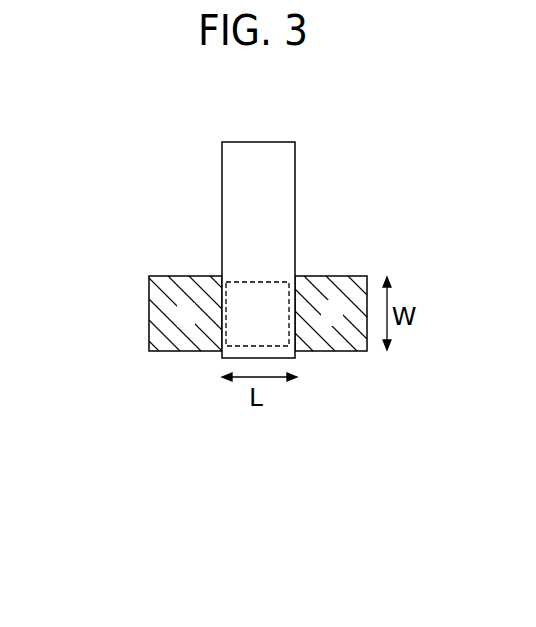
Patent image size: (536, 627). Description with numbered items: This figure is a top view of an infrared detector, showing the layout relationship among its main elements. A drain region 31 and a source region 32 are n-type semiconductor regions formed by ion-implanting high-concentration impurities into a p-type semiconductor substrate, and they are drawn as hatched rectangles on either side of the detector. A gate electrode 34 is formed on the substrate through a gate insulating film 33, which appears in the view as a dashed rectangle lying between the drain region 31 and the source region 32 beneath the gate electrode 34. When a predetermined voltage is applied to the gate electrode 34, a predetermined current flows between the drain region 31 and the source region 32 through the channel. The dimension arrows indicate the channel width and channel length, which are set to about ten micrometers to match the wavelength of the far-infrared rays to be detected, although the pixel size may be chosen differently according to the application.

The drain region 31 is at (332, 351).
The source region 32 is at (161, 317).
The gate insulating film 33 is at (289, 282).
The gate electrode 34 is at (260, 151).